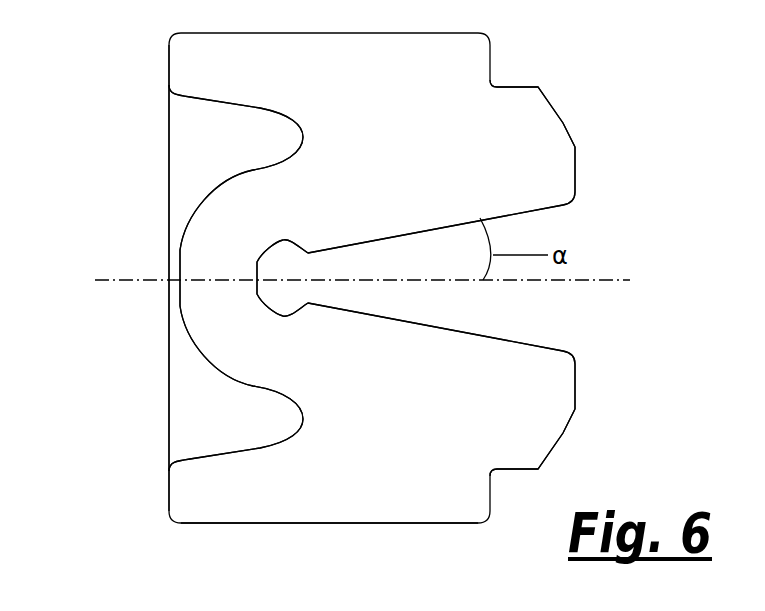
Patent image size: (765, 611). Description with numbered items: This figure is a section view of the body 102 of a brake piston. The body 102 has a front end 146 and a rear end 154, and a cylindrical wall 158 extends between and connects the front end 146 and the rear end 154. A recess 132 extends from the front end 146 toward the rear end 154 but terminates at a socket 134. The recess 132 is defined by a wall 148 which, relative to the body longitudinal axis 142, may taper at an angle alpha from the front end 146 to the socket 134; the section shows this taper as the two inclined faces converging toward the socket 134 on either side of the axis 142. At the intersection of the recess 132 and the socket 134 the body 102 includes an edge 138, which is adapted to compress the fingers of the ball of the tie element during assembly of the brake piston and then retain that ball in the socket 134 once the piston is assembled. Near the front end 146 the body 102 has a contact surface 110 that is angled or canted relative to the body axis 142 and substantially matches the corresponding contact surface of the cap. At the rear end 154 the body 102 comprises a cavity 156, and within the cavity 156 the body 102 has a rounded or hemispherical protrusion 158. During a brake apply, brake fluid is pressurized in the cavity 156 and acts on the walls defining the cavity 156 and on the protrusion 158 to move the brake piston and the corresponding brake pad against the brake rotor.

The body 102 is at (163, 69).
The rear end 154 is at (169, 121).
The cavity 156 is at (203, 156).
The cylindrical wall 158 is at (197, 215).
The socket 134 is at (278, 268).
The edge 138 is at (307, 252).
The body longitudinal axis 142 is at (110, 283).
The contact surface 110 is at (563, 123).
The front end 146 is at (576, 172).
The wall 148 is at (541, 207).
The recess 132 is at (530, 347).